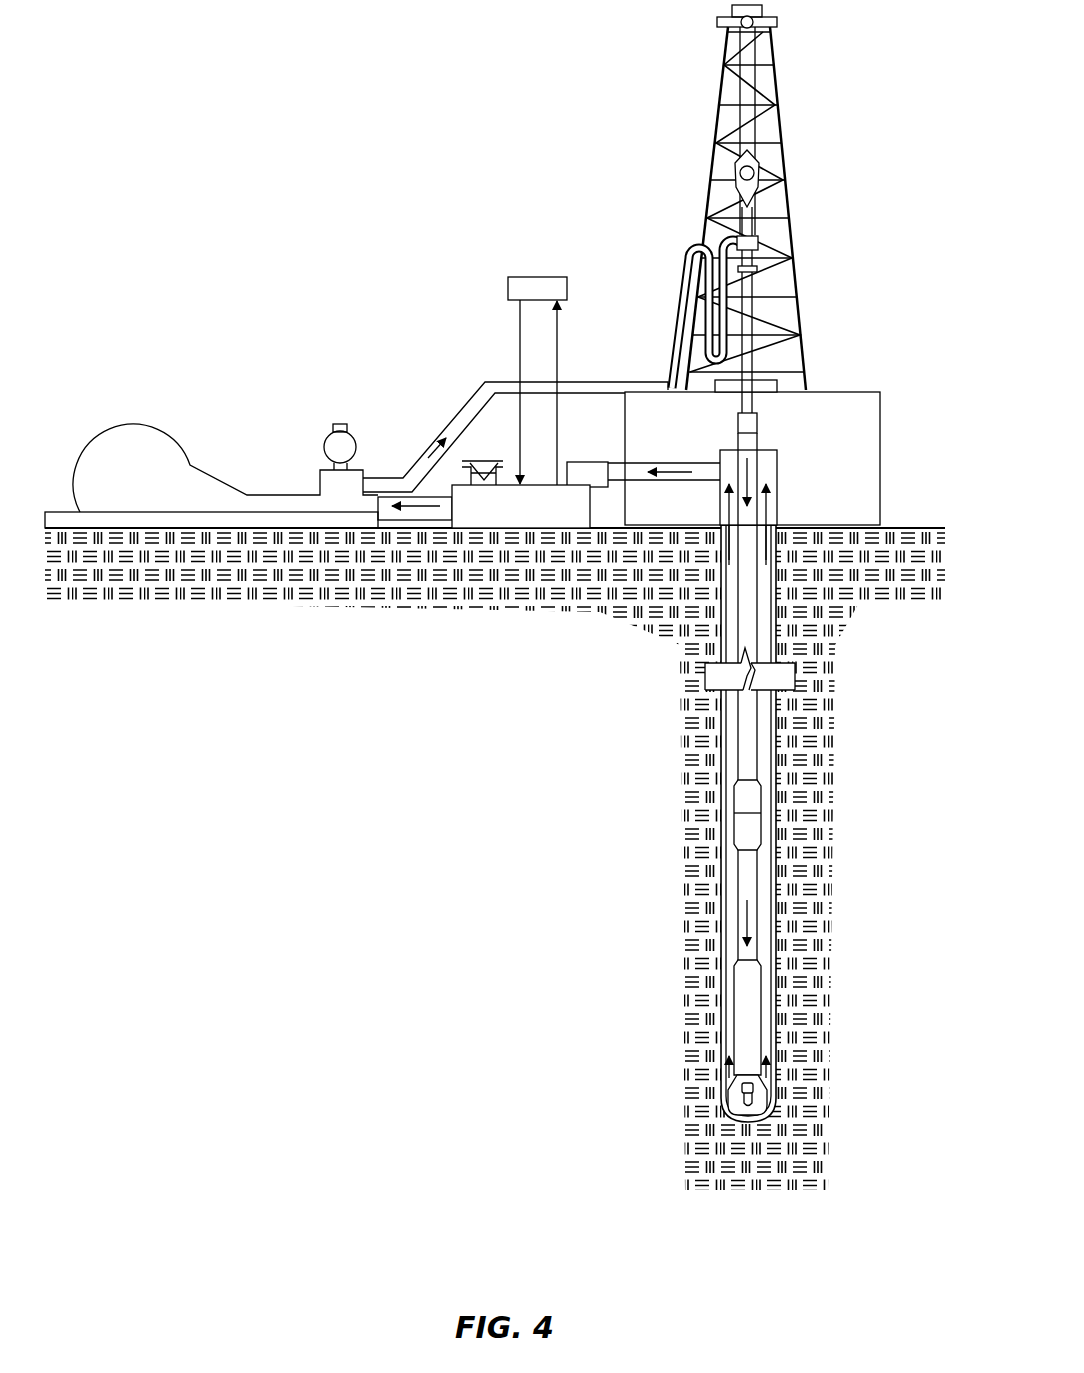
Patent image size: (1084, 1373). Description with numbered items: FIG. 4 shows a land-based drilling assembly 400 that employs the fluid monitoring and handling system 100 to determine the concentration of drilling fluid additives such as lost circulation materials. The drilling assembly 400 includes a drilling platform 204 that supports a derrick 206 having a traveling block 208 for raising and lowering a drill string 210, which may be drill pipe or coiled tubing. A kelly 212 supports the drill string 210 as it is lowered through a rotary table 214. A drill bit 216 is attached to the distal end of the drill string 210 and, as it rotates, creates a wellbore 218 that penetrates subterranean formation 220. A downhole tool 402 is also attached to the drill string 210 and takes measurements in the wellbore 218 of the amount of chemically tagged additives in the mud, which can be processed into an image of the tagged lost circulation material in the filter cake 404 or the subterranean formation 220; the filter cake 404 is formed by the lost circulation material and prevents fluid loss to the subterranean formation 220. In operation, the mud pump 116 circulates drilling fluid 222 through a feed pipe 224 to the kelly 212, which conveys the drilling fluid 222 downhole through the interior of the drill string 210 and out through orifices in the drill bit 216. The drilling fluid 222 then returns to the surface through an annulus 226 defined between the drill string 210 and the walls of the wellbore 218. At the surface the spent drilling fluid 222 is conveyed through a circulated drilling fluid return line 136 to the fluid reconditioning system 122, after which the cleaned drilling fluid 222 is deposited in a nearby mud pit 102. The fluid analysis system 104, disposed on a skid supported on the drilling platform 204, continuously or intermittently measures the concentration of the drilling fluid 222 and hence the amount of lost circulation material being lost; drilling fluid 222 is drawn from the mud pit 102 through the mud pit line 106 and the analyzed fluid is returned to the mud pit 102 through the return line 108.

The drilling assembly 400 is at (440, 93).
The fluid monitoring and handling system 100 is at (330, 385).
The derrick 206 is at (775, 85).
The traveling block 208 is at (760, 160).
The kelly 212 is at (749, 305).
The rotary table 214 is at (760, 385).
The drilling platform 204 is at (882, 428).
The fluid analysis system 104 is at (538, 276).
The return line 108 is at (518, 346).
The mud pit line 106 is at (559, 346).
The feed pipe 224 is at (490, 383).
The drilling fluid 222 is at (440, 458).
The fluid reconditioning system 122 is at (586, 462).
The circulated drilling fluid return line 136 is at (700, 480).
The mud pump 116 is at (156, 494).
The mud pit 102 is at (553, 522).
The subterranean formation 220 is at (492, 793).
The drill string 210 is at (748, 595).
The wellbore 218 is at (776, 730).
The filter cake 404 is at (761, 820).
The annulus 226 is at (765, 895).
The downhole tool 402 is at (748, 1015).
The drill bit 216 is at (777, 1108).